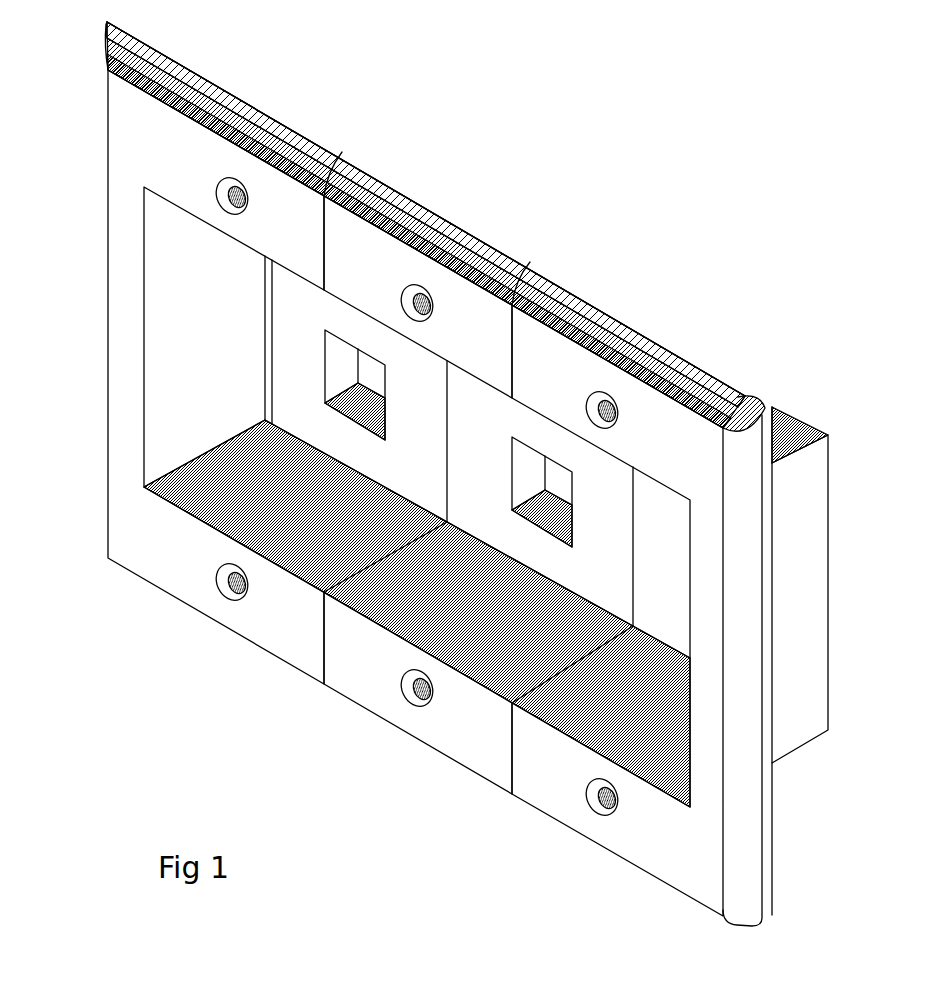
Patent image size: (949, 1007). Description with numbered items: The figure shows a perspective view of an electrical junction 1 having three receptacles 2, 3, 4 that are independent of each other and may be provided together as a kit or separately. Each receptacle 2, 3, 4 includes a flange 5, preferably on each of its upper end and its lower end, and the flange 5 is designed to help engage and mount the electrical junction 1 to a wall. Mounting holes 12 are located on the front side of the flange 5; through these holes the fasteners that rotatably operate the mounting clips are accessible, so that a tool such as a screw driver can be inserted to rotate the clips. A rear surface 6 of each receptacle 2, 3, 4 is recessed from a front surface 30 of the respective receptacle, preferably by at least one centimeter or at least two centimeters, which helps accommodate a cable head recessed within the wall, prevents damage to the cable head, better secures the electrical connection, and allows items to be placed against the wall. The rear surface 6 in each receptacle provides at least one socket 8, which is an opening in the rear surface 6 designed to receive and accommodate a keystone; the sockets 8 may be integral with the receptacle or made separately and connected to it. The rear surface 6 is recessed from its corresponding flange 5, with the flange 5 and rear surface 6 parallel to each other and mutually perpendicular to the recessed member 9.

The electrical junction 1 is at (583, 187).
The receptacle 2 is at (222, 652).
The receptacle 3 is at (373, 700).
The receptacle 4 is at (563, 806).
The flange 5 is at (137, 123).
The rear surface 6 is at (838, 595).
The socket 8 is at (525, 486).
The recessed member 9 is at (800, 493).
The mounting hole 12 is at (236, 176).
The front surface 30 is at (657, 423).